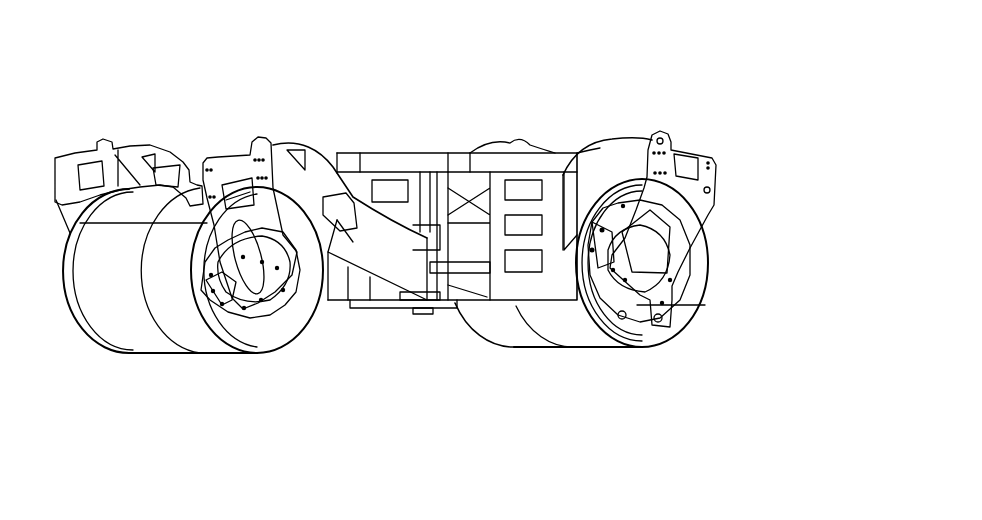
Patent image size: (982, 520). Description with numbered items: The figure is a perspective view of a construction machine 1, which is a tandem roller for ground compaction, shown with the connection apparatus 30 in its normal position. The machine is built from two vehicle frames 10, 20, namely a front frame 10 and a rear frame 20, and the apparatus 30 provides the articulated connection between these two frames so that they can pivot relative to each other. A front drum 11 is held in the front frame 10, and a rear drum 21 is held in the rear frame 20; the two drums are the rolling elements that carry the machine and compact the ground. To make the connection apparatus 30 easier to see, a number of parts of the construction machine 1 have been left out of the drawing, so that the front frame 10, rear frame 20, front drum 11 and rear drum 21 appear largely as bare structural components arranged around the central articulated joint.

The construction machine 1 is at (643, 107).
The front frame 10 is at (607, 165).
The front drum 11 is at (577, 335).
The rear frame 20 is at (377, 253).
The rear drum 21 is at (180, 305).
The apparatus 30 is at (443, 318).